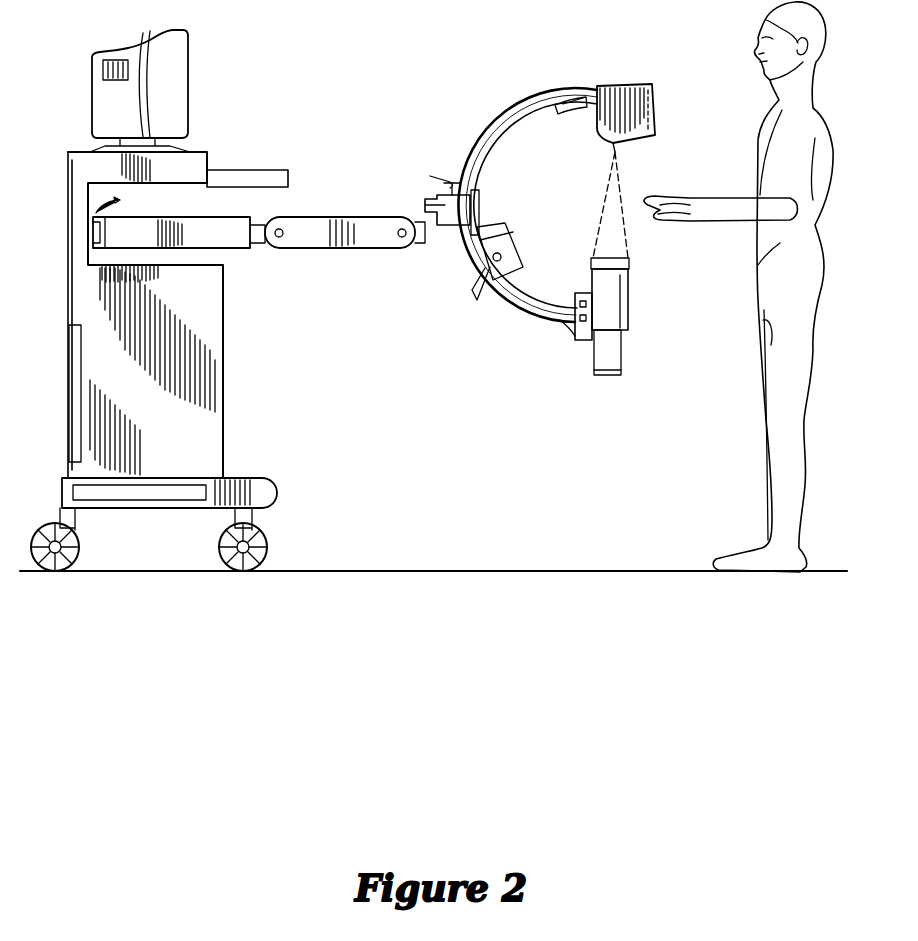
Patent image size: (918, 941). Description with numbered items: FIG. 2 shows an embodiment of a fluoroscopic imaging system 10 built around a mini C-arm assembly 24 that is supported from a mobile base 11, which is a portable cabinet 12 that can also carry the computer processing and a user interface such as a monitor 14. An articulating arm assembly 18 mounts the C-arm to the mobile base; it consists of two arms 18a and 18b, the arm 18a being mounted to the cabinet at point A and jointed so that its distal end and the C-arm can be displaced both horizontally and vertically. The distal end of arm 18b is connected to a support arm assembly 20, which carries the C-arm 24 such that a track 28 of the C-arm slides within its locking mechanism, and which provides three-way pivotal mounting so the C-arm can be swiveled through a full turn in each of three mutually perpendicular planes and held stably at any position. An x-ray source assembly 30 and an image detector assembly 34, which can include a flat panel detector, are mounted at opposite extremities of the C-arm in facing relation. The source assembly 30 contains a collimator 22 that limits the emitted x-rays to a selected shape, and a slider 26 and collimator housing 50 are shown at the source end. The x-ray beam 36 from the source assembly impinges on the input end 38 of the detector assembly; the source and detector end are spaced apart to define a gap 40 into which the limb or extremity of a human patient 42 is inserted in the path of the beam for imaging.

The mobile X-ray imaging system 10 is at (232, 118).
The mobile base 11 is at (157, 385).
The mobile cart / base unit 12 is at (66, 292).
The display monitor 14 is at (165, 50).
The articulating arm assembly 18 is at (259, 216).
The arm 18a is at (232, 217).
The arm 18b is at (355, 217).
The support arm assembly 20 is at (466, 225).
The collimator 22 is at (480, 255).
The mini C-arm assembly 24 is at (523, 191).
The slider on C-arm track 26 is at (591, 85).
The track 28 is at (504, 163).
The x-ray source assembly 30 is at (657, 112).
The image detector assembly 34 is at (624, 297).
The x-ray beam 36 is at (615, 158).
The input end 38 is at (610, 260).
The gap 40 is at (608, 186).
The human patient 42 is at (722, 200).
The collimator / source assembly 50 is at (652, 95).